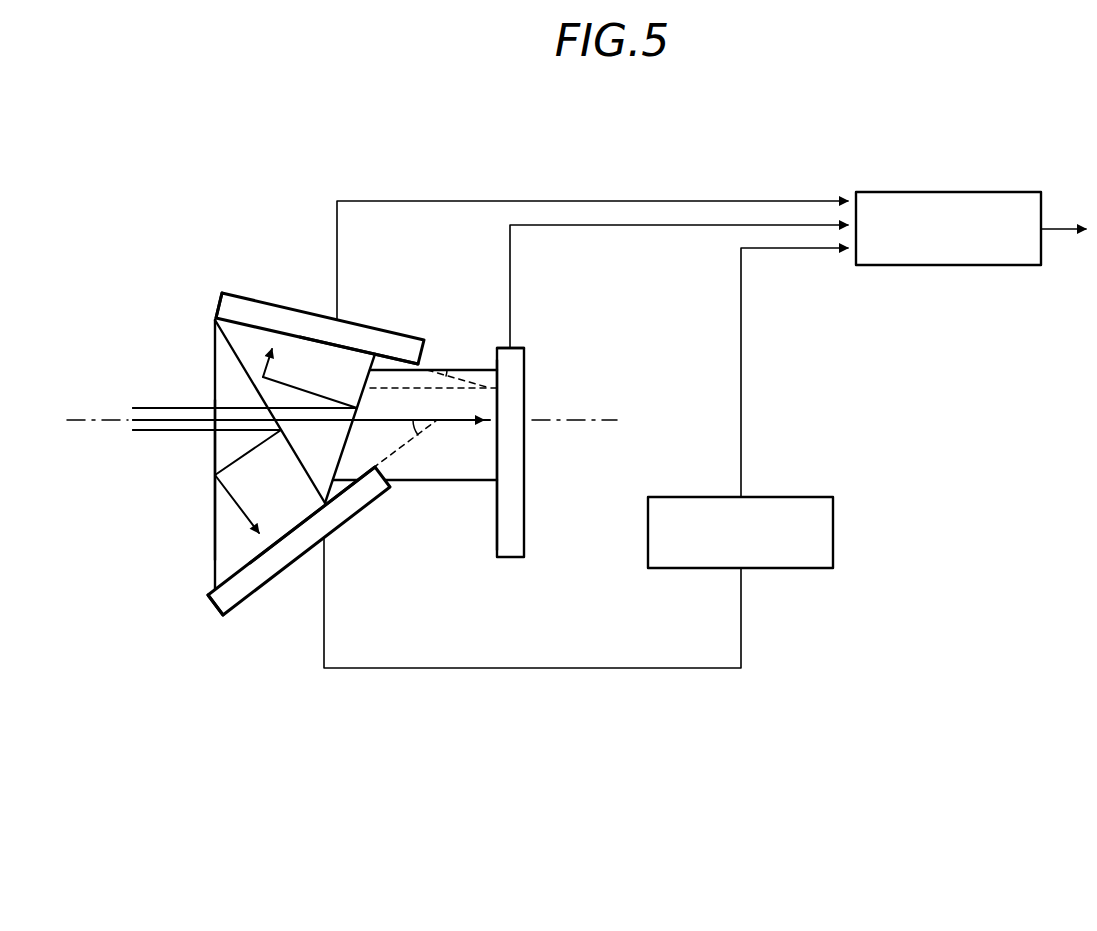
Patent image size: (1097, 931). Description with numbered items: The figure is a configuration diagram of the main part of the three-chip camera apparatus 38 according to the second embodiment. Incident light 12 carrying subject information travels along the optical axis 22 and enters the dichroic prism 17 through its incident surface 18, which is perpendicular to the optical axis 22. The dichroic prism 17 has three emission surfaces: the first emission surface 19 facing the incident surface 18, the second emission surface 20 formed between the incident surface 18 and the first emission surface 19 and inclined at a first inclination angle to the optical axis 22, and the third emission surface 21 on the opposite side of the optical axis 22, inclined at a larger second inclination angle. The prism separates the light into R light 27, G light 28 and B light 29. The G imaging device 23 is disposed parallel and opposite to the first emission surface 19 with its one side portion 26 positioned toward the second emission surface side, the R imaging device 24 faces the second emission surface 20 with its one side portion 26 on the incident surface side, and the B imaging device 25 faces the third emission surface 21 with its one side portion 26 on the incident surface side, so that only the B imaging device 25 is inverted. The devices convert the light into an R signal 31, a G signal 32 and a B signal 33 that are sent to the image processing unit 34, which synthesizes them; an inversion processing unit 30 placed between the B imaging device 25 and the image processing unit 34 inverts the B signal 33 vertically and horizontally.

The incident light 12 is at (133, 396).
The dichroic prism 17 is at (204, 338).
The incident surface 18 is at (213, 560).
The first emission surface 19 is at (493, 448).
The second emission surface 20 is at (348, 356).
The third emission surface 21 is at (297, 527).
The optical axis 22 is at (604, 417).
The G imaging device 23 is at (525, 387).
The R imaging device 24 is at (270, 300).
The B imaging device 25 is at (257, 598).
The one side portion 26 is at (221, 293).
The R light 27 is at (157, 407).
The G light 28 is at (143, 421).
The B light 29 is at (170, 431).
The inversion processing unit 30 is at (808, 497).
The R signal 31 is at (497, 200).
The G signal 32 is at (680, 227).
The B signal 33 is at (607, 668).
The image processing unit 34 is at (968, 192).
The three-chip camera apparatus 38 is at (270, 148).